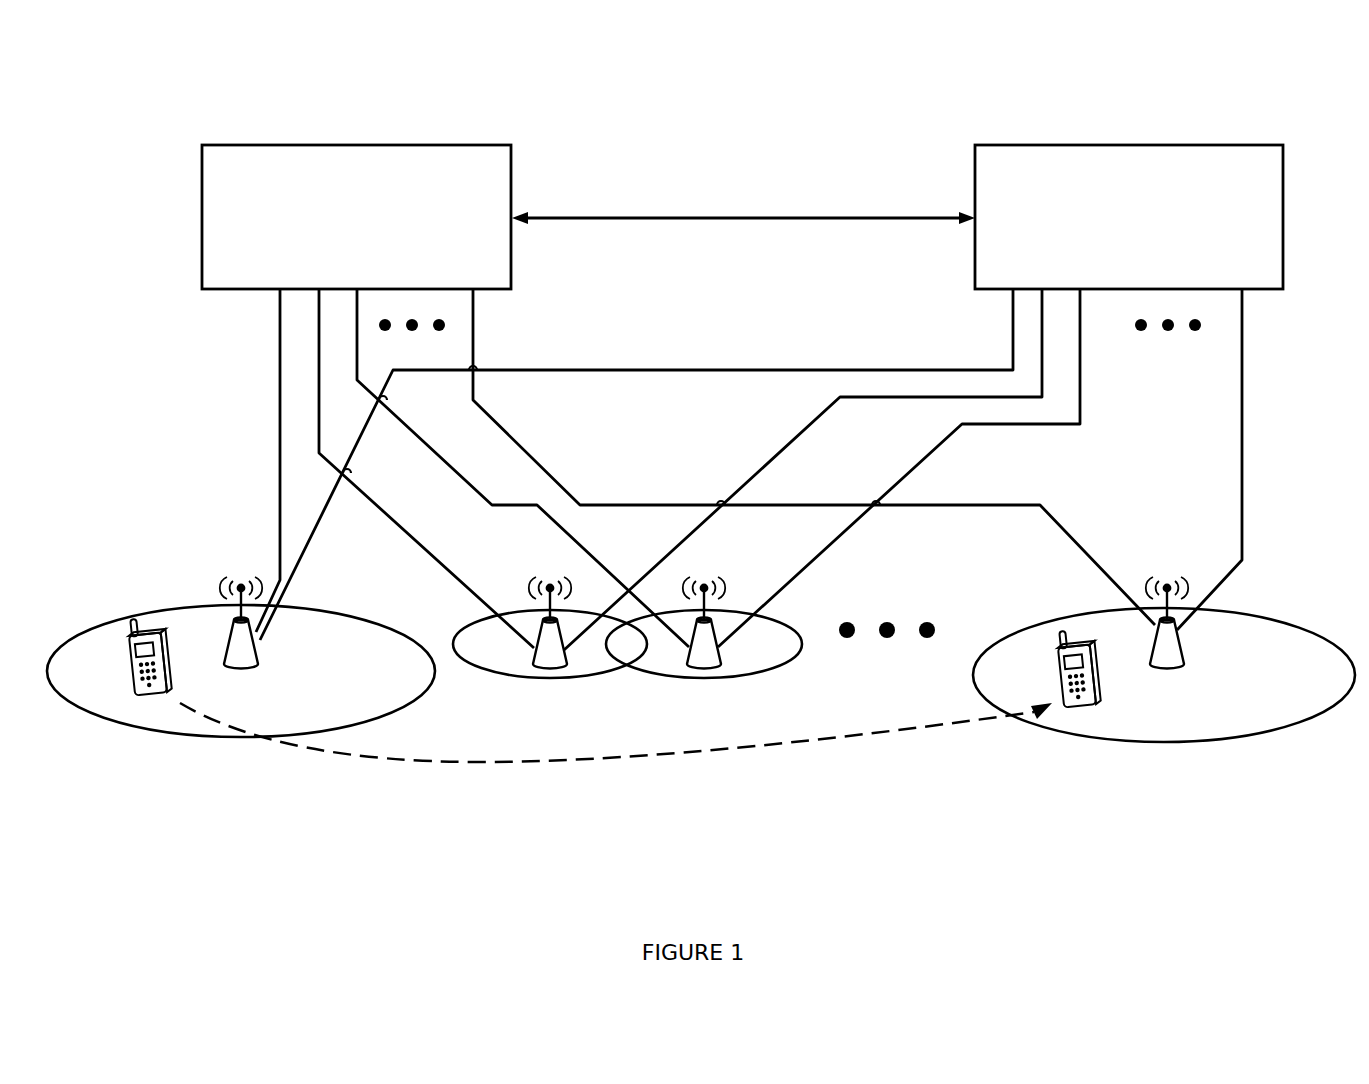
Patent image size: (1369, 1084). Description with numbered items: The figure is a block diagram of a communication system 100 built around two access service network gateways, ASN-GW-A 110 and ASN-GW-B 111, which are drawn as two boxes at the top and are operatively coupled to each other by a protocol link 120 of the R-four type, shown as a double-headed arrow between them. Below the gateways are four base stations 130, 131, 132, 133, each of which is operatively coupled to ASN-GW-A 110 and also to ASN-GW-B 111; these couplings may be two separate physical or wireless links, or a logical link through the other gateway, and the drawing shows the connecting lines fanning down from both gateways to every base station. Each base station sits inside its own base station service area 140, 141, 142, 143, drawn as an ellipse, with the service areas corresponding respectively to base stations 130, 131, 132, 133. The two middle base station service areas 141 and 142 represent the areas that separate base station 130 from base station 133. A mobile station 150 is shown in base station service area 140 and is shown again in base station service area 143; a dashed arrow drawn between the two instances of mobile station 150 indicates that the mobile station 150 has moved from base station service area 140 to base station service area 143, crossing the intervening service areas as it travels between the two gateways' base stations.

The communication system 100 is at (369, 85).
The ASN-GW-A 110 is at (377, 244).
The ASN-GW-B 111 is at (1111, 244).
The R4 protocol link 120 is at (677, 215).
The base station 130 is at (228, 625).
The base station 131 is at (557, 668).
The base station 132 is at (706, 668).
The base station 133 is at (1183, 632).
The base station service area 140 is at (155, 607).
The base station service area 141 is at (466, 625).
The base station service area 142 is at (777, 617).
The base station service area 143 is at (1076, 610).
The mobile station 150 is at (152, 697).